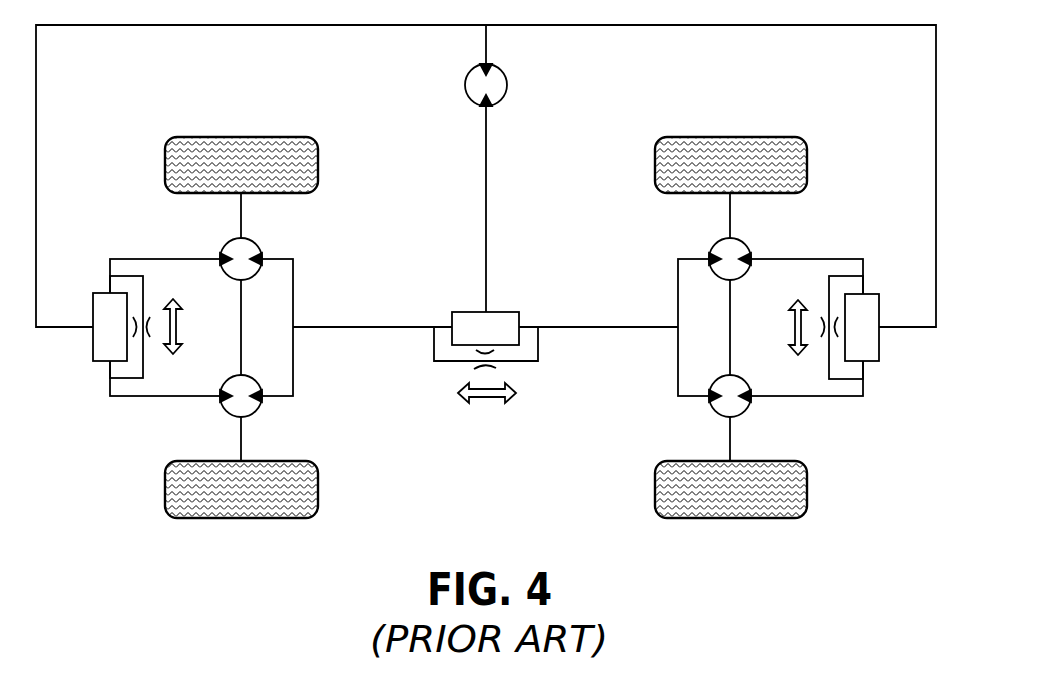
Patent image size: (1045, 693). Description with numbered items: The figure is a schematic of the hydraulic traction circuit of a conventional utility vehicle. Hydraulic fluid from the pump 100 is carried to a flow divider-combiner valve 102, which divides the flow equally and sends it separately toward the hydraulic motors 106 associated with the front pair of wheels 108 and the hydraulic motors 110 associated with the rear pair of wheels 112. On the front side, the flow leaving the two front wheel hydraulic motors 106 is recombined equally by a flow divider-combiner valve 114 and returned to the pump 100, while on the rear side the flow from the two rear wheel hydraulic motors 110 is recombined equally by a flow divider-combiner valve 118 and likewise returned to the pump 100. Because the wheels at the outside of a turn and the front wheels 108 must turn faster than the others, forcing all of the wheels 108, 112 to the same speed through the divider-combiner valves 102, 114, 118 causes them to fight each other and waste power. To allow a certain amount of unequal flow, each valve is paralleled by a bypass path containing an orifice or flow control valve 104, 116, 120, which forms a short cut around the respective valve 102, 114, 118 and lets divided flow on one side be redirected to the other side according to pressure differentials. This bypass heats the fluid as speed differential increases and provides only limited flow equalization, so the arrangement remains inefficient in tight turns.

The pump 100 is at (466, 85).
The flow divider-combiner valve 102 is at (470, 312).
The orifice or flow control valve 104 is at (496, 367).
The hydraulic motors 106 is at (258, 245).
The front pair of wheels 108 is at (270, 137).
The hydraulic motors 110 is at (713, 245).
The rear pair of wheels 112 is at (700, 137).
The flow divider-combiner valve 114 is at (93, 310).
The orifice or flow control valve 116 is at (143, 340).
The flow divider-combiner valve 118 is at (879, 345).
The orifice or flow control valve 120 is at (829, 338).